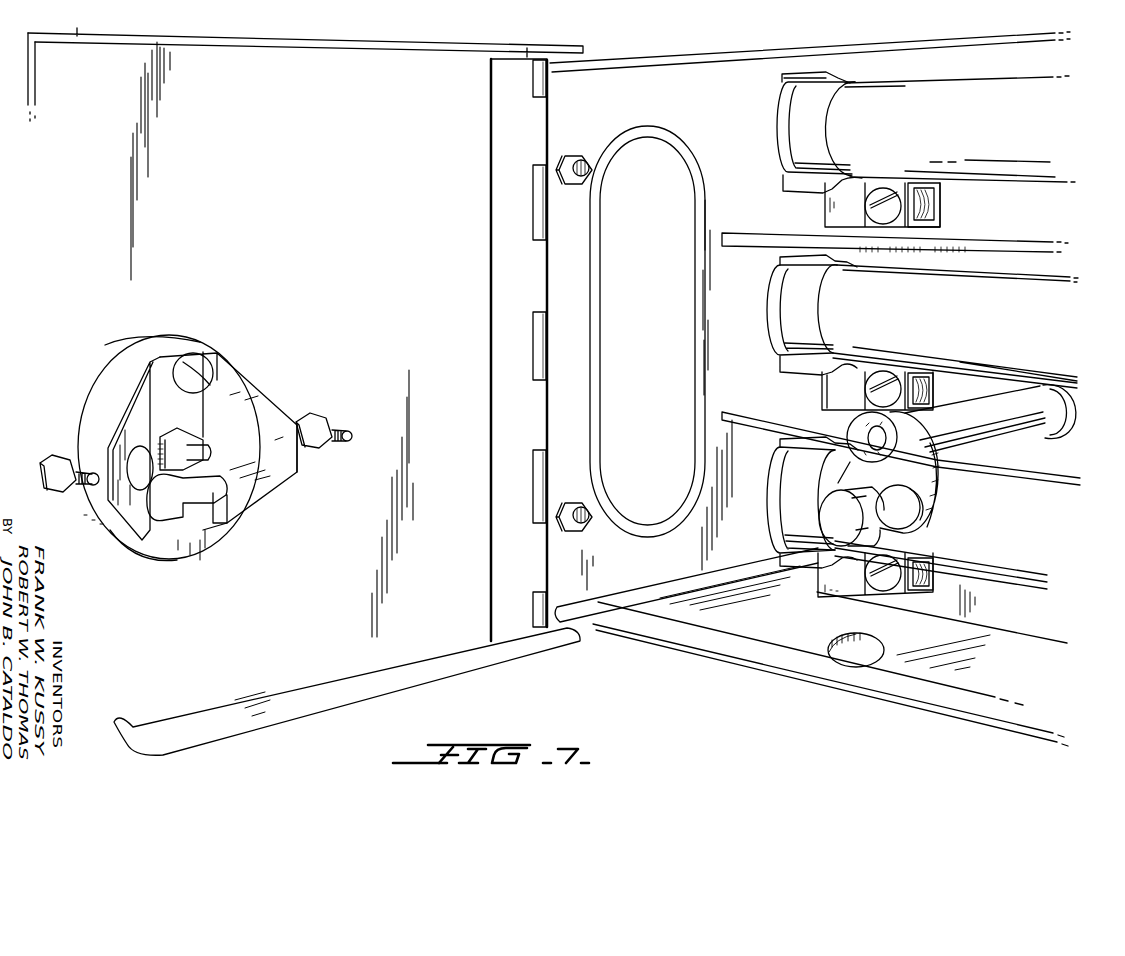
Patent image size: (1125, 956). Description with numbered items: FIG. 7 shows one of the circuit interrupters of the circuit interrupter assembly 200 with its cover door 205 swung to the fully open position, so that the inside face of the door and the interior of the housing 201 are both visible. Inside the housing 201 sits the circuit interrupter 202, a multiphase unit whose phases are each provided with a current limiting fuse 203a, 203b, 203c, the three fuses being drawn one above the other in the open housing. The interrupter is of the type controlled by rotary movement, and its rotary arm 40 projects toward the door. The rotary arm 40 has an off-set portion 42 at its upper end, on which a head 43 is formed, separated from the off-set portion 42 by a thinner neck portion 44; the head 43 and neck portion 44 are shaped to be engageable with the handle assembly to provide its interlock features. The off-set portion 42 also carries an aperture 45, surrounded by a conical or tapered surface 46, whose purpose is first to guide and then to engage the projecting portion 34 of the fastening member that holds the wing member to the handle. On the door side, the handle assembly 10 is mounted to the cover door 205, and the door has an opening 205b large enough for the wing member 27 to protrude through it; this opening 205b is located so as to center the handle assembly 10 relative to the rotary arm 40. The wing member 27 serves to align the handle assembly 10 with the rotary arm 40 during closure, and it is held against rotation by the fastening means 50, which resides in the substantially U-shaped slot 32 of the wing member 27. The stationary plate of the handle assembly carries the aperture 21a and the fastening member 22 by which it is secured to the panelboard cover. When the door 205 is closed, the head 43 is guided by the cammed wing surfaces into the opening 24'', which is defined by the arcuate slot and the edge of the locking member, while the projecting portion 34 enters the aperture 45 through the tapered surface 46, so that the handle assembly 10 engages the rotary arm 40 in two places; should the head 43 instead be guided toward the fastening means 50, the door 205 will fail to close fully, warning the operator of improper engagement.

The handle assembly 10 is at (186, 316).
The fastening member 22 is at (63, 465).
The opening 24'' is at (187, 531).
The wing member 27 is at (293, 406).
The U-shaped slot 32 is at (152, 368).
The projecting portion 34 is at (212, 452).
The fastening means 50 is at (198, 358).
The aperture 21a is at (303, 450).
The cover door 205 is at (300, 598).
The opening 205b is at (243, 366).
The circuit interrupter assembly 200 is at (765, 726).
The housing 201 is at (700, 640).
The circuit interrupter 202 is at (748, 154).
The current limiting fuse 203a is at (990, 175).
The current limiting fuse 203b is at (962, 282).
The current limiting fuse 203c is at (1018, 572).
The rotary arm 40 is at (916, 462).
The off-set portion 42 is at (941, 493).
The head 43 is at (827, 517).
The neck portion 44 is at (923, 535).
The aperture 45 is at (875, 428).
The tapered surface 46 is at (852, 432).